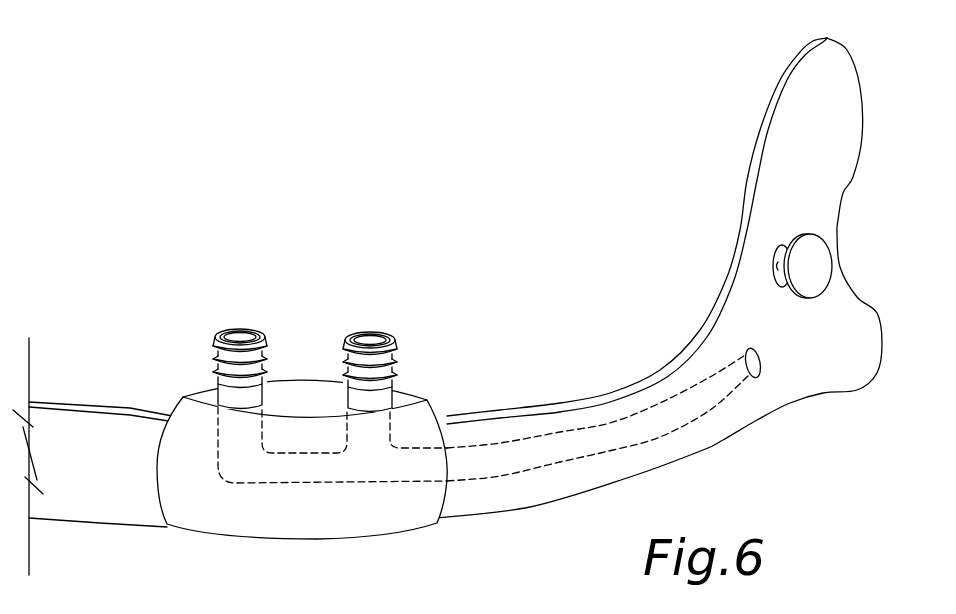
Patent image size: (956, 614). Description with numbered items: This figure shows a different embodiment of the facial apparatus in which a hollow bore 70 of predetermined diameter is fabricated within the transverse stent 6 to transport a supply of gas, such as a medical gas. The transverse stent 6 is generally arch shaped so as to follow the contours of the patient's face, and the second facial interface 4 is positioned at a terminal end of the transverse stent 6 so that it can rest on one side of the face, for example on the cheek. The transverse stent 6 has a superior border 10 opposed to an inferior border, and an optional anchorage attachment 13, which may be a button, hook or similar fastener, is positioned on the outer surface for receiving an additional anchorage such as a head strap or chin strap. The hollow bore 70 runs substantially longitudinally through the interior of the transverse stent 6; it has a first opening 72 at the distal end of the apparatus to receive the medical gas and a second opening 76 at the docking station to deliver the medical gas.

The second facial interface 4 is at (828, 156).
The transverse stent 6 is at (87, 470).
The superior border 10 is at (667, 367).
The anchorage attachment 13 is at (818, 258).
The hollow bore 70 is at (547, 433).
The first opening 72 is at (753, 373).
The second opening 76 is at (370, 338).